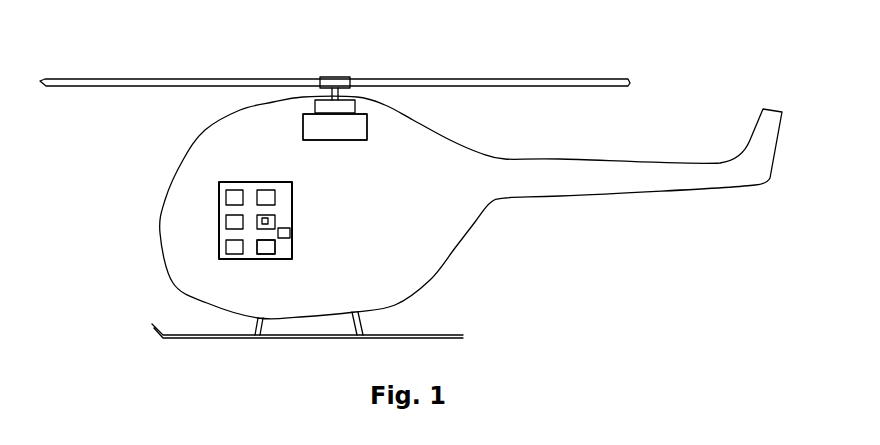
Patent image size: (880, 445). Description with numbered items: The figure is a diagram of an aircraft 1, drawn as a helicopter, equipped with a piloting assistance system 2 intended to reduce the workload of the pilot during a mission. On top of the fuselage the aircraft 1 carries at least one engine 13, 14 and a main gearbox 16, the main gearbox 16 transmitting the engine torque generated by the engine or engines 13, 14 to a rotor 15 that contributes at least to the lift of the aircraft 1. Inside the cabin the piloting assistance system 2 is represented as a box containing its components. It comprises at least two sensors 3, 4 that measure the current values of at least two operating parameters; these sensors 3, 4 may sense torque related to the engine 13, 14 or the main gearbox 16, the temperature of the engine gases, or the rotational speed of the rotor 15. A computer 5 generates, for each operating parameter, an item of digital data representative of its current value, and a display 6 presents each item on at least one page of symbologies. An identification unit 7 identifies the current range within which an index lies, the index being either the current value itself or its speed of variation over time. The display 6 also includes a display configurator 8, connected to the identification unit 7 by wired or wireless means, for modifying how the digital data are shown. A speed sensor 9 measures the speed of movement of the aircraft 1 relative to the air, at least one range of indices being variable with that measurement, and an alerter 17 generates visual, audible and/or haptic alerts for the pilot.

The aircraft 1 is at (497, 256).
The piloting assistance system 2 is at (230, 232).
The sensor 3 is at (226, 195).
The sensor 4 is at (226, 221).
The computer 5 is at (275, 194).
The display 6 is at (268, 221).
The identification unit 7 is at (226, 247).
The display configurator 8 is at (290, 233).
The speed sensor 9 is at (275, 247).
The engine 13 is at (367, 127).
The engine 14 is at (335, 127).
The rotor 15 is at (456, 79).
The main gearbox 16 is at (315, 104).
The alerter 17 is at (292, 249).